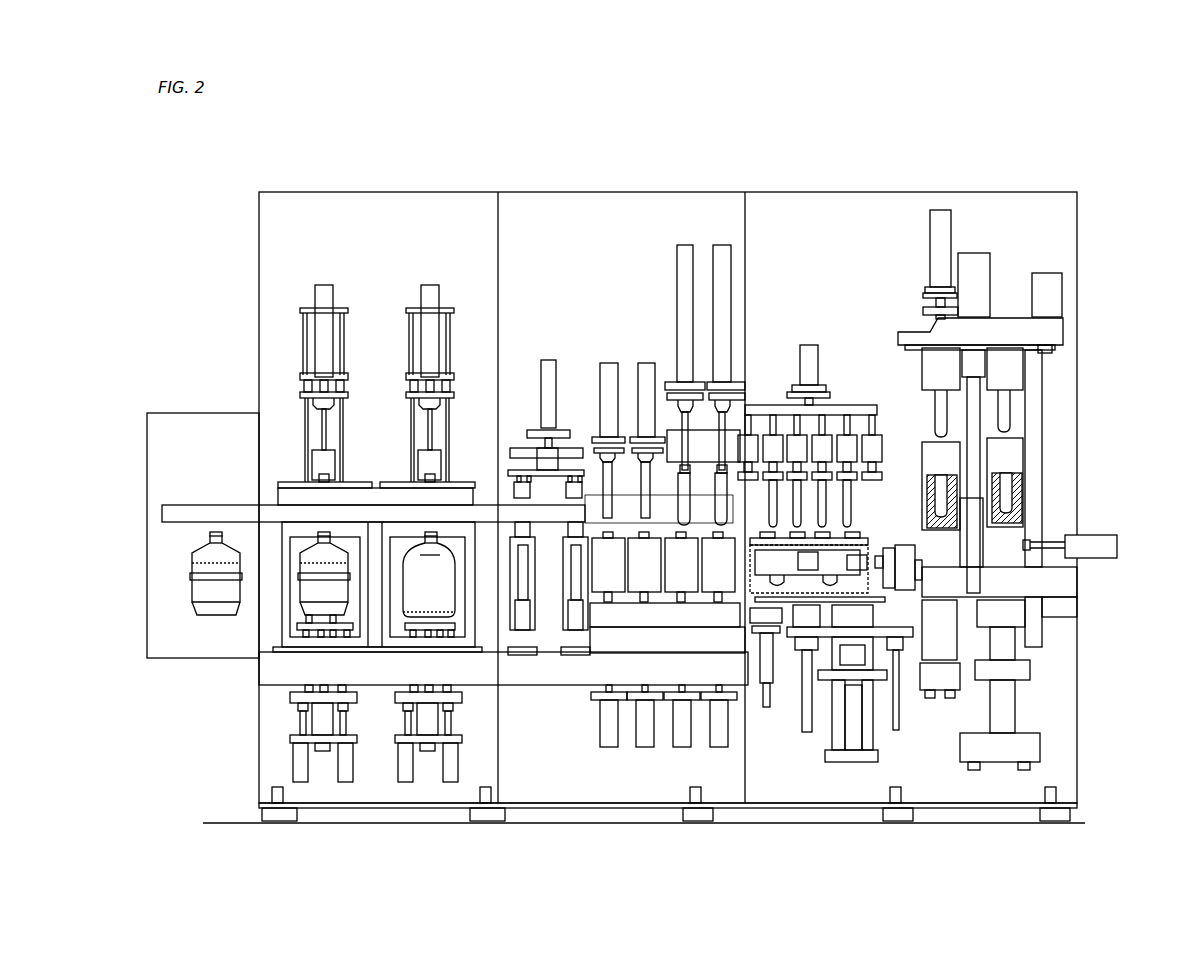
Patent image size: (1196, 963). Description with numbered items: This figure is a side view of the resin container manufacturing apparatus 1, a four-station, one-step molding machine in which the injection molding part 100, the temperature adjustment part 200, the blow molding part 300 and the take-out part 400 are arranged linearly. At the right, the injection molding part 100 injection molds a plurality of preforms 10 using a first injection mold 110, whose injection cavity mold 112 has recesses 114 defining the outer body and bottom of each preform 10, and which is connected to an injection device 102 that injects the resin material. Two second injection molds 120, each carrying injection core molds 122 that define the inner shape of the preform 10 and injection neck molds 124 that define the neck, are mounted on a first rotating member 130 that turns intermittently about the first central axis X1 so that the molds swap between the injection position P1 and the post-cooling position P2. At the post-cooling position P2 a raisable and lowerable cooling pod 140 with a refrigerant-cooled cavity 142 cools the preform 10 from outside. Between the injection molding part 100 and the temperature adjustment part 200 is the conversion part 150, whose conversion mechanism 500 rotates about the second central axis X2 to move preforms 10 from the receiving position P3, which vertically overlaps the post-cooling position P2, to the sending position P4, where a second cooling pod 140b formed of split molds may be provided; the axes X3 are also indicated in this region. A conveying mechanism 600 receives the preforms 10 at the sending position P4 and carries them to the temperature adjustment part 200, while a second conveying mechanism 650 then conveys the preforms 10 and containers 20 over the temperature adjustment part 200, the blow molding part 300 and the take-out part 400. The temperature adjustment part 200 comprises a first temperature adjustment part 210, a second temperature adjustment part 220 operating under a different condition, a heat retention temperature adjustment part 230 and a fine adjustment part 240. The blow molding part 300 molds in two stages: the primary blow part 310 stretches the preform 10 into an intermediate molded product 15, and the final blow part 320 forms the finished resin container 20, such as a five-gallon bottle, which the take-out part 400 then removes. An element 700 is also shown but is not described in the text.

The resin container manufacturing apparatus 1 is at (669, 495).
The preform 10 is at (766, 495).
The intermediate molded product 15 is at (405, 612).
The resin container 20 is at (190, 590).
The injection molding part 100 is at (945, 499).
The injection device 102 is at (1108, 560).
The first injection mold 110 is at (1028, 487).
The injection cavity mold 112 is at (1109, 482).
The recess 114 is at (1024, 517).
The second injection mold 120 is at (998, 387).
The injection core mold 122 is at (937, 412).
The injection neck mold 124 is at (925, 392).
The first rotating member 130 is at (897, 342).
The cooling pod 140 is at (920, 484).
The second cooling pod 140b is at (767, 606).
The cavity 142 is at (938, 499).
The conversion part 150 is at (830, 332).
The temperature adjustment part 200 is at (622, 445).
The first temperature adjustment part 210 is at (702, 245).
The second temperature adjustment part 220 is at (628, 357).
The heat retention temperature adjustment part 230 is at (552, 603).
The fine adjustment part 240 is at (500, 603).
The blow molding part 300 is at (376, 316).
The primary blow part 310 is at (430, 320).
The final blow part 320 is at (320, 272).
The take-out part 400 is at (208, 403).
The conversion mechanism 500 is at (868, 528).
The conveying mechanism 600 is at (763, 404).
The conveying mechanism 650 is at (485, 502).
The sensor cylinder 700 is at (790, 332).
The injection position P1 is at (1006, 309).
The post-cooling position P2 is at (932, 207).
The receiving position P3 is at (906, 672).
The sending position P4 is at (787, 667).
The first central axis X1 is at (970, 250).
The second central axis X2 is at (853, 762).
The third axis X3 is at (806, 735).